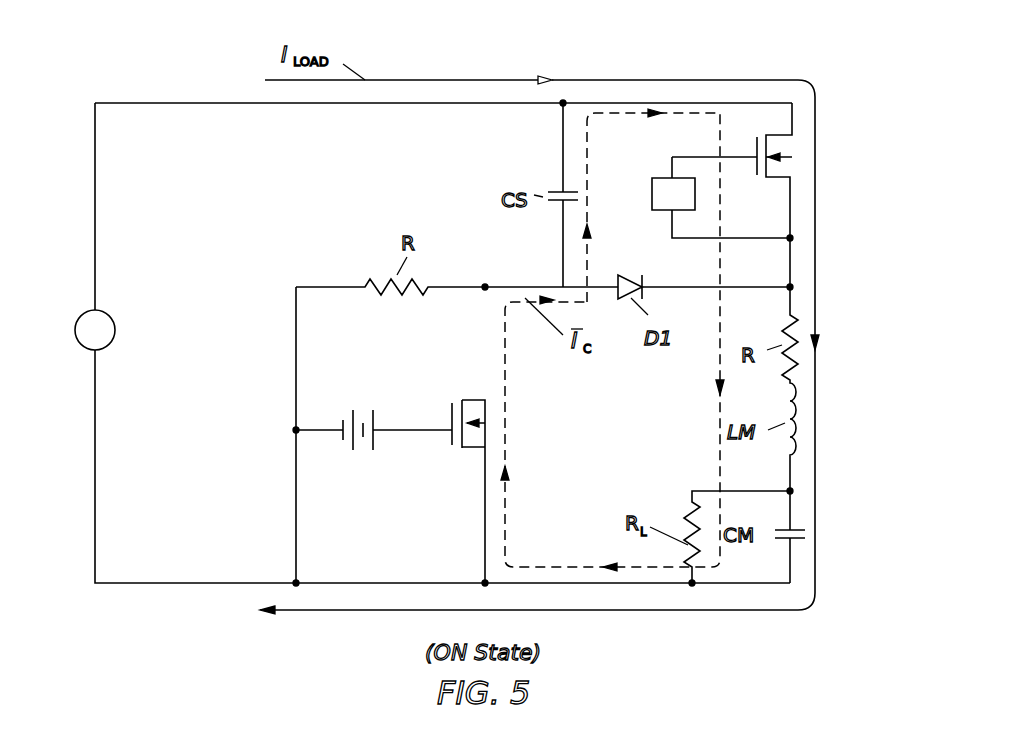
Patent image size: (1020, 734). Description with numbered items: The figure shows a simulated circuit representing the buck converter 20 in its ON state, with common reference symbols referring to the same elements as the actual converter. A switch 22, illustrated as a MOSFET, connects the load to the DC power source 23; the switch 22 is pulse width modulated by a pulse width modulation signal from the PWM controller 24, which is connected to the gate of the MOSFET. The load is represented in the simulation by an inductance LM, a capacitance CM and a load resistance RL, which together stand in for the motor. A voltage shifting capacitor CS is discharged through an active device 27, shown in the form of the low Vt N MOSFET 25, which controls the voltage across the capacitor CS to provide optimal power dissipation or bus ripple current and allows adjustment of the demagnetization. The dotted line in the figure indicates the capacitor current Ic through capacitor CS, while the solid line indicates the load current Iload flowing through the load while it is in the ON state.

The buck converter 20 is at (165, 101).
The switch 22 is at (800, 157).
The DC power source 23 is at (116, 322).
The PWM controller 24 is at (652, 192).
The low Vt N MOSFET 25 is at (488, 427).
The active device 27 is at (293, 365).